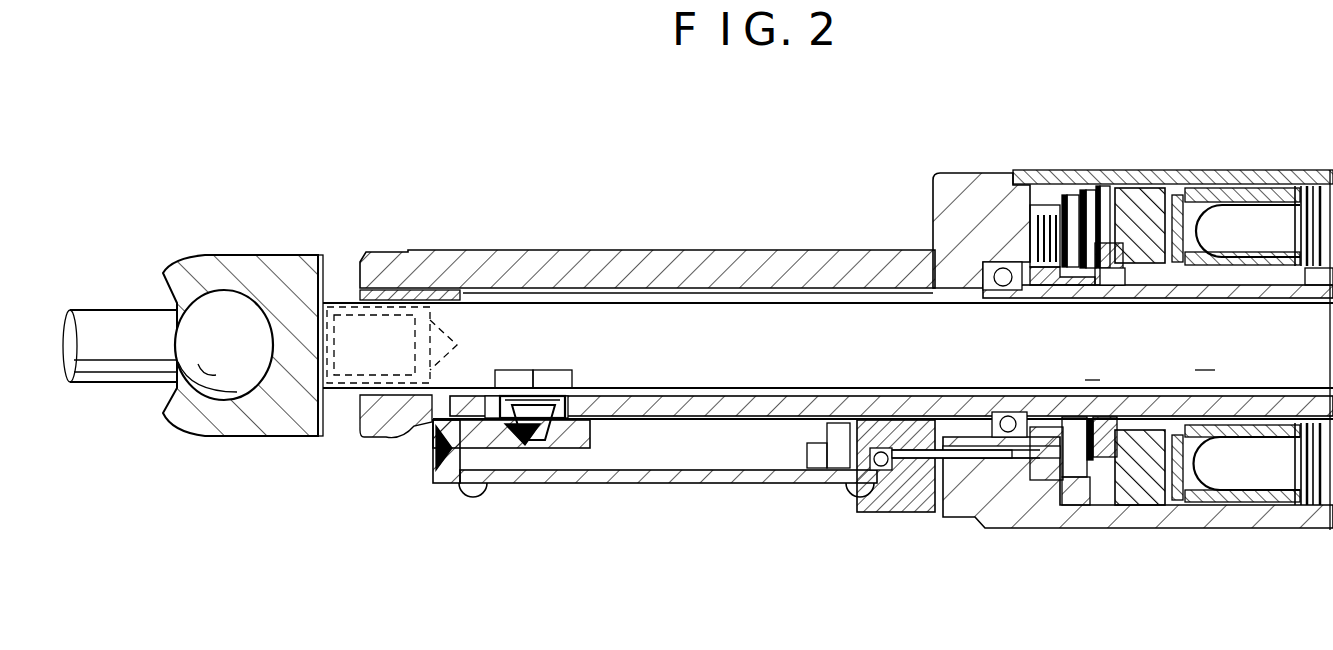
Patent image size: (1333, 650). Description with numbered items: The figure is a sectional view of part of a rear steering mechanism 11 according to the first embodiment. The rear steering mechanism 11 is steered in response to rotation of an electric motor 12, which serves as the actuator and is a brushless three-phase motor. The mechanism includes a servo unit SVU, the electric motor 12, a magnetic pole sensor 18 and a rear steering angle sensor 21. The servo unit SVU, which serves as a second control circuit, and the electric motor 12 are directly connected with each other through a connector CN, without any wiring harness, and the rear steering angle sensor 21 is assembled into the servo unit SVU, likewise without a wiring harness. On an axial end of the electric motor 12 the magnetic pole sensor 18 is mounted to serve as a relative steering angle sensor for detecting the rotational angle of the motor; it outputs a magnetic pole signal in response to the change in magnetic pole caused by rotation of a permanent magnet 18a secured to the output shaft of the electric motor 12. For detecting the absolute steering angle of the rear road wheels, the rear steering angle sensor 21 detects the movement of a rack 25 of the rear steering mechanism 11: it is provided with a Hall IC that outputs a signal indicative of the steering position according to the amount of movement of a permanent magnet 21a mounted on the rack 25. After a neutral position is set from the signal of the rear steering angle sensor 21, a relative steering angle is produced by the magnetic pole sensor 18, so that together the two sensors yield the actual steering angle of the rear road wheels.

The rear steering mechanism 11 is at (893, 192).
The electric motor 12 is at (1232, 475).
The magnetic pole sensor 18 is at (1050, 222).
The permanent magnet 18a is at (1118, 240).
The rear steering angle sensor 21 is at (398, 428).
The permanent magnet 21a is at (512, 377).
The rack 25 is at (628, 335).
The servo unit SVU is at (718, 485).
The connector CN is at (895, 512).